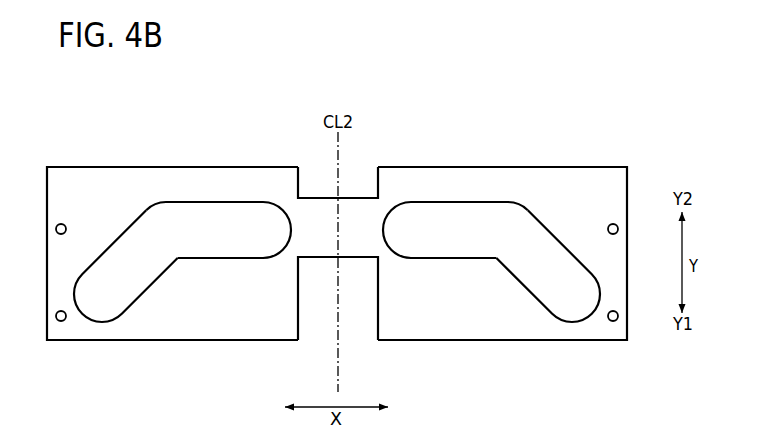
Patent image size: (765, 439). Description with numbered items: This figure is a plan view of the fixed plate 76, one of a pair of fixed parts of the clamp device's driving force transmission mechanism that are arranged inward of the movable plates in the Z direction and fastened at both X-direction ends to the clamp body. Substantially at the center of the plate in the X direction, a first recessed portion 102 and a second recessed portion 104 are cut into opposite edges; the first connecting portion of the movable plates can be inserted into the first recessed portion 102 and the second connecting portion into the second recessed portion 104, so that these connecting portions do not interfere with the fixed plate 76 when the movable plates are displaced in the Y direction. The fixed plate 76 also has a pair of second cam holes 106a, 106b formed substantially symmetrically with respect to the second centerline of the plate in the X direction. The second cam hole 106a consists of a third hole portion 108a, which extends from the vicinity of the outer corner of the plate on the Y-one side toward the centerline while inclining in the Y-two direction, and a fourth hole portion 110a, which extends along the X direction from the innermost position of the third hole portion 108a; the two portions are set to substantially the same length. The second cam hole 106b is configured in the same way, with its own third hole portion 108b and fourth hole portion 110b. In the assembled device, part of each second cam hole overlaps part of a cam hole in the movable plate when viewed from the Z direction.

The fixed plate 76 is at (362, 236).
The first recessed portion 102 is at (358, 332).
The second recessed portion 104 is at (358, 178).
The second cam hole 106a is at (491, 201).
The second cam hole 106b is at (182, 201).
The third hole portion 108a is at (534, 240).
The third hole portion 108b is at (143, 240).
The fourth hole portion 110a is at (455, 189).
The fourth hole portion 110b is at (208, 215).